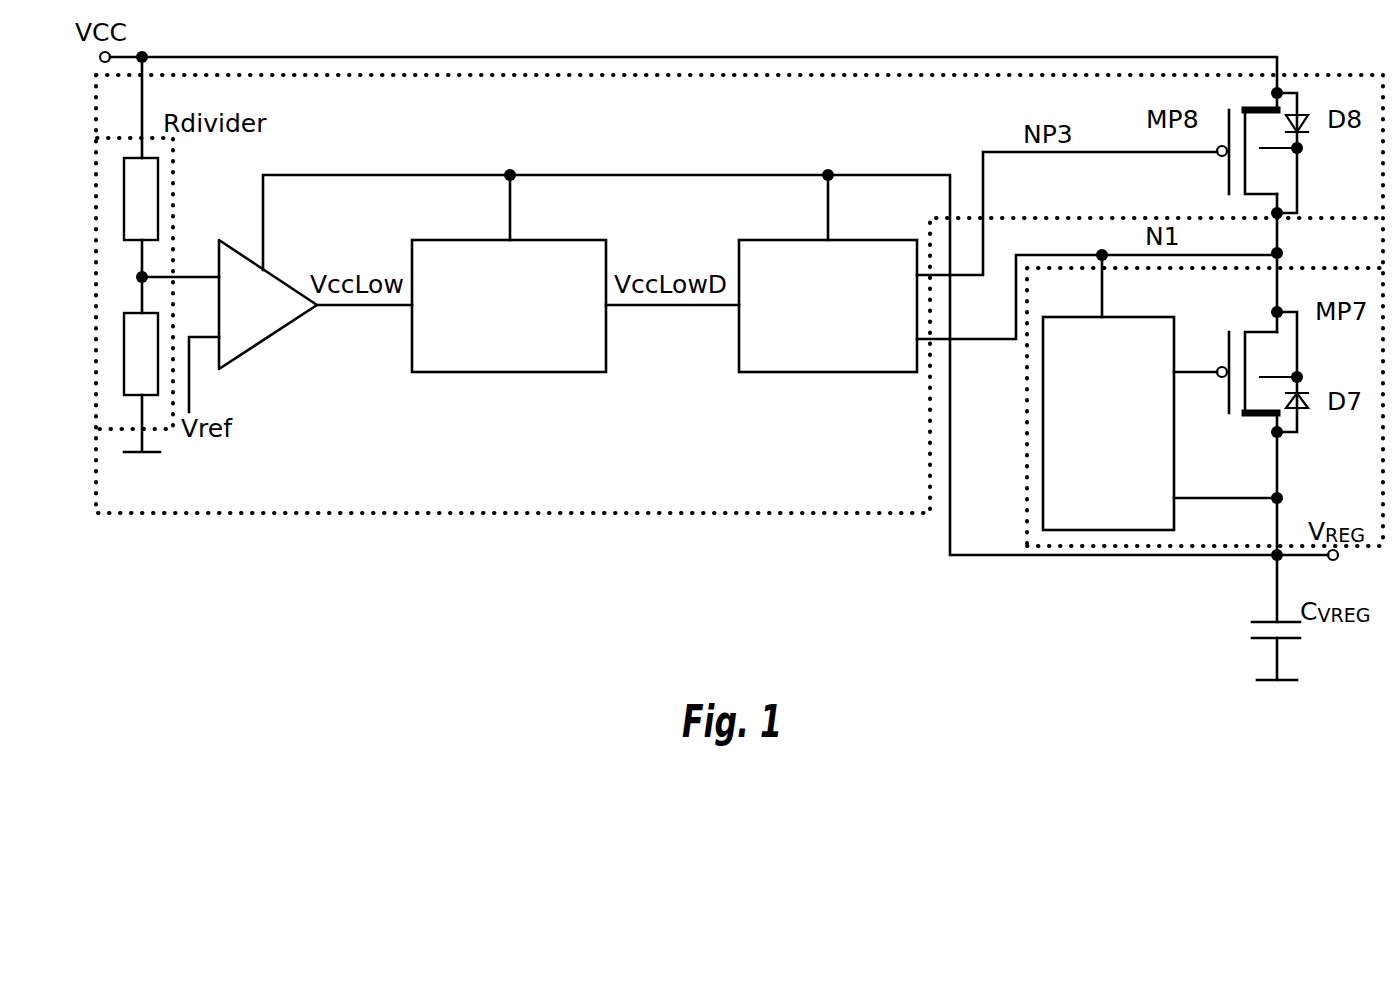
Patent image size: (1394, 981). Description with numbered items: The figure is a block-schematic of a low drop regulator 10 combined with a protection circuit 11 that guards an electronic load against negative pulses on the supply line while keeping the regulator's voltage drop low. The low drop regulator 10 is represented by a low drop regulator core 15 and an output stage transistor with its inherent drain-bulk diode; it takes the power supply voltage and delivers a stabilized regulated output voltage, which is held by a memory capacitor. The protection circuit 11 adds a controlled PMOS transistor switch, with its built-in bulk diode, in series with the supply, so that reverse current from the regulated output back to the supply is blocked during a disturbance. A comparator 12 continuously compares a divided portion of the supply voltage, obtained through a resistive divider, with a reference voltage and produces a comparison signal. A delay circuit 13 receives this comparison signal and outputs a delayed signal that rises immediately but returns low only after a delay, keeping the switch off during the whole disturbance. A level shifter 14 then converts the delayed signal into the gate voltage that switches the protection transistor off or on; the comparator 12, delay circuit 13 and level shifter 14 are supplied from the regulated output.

The low drop regulator 10 is at (1058, 546).
The protection circuit 11 is at (373, 513).
The comparator 12 is at (263, 345).
The delay circuit 13 is at (465, 372).
The level shifter 14 is at (775, 372).
The low drop regulator core 15 is at (1094, 385).